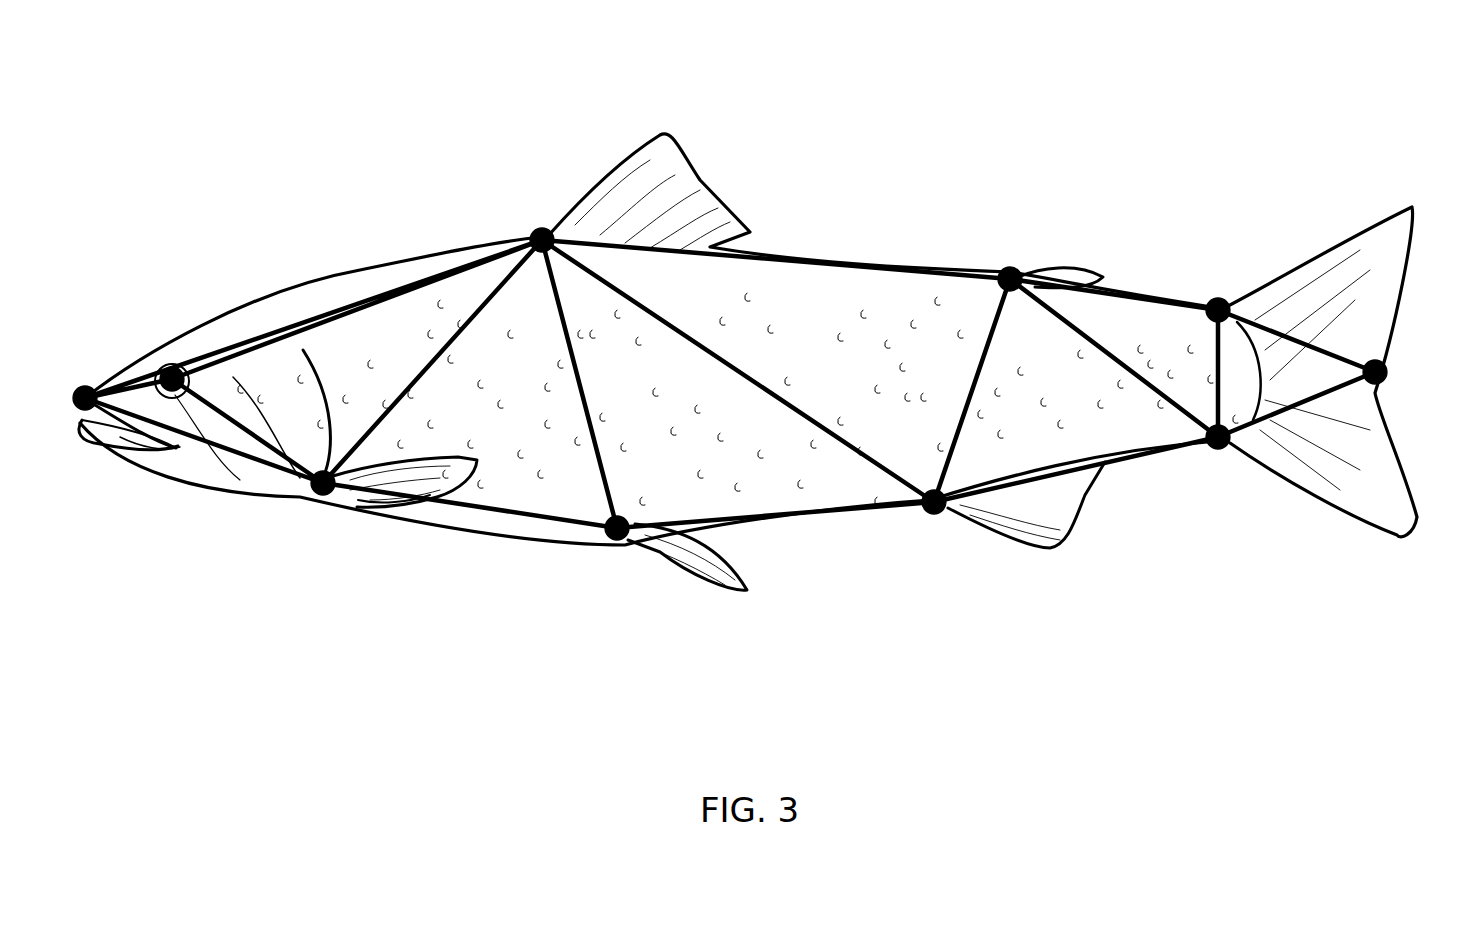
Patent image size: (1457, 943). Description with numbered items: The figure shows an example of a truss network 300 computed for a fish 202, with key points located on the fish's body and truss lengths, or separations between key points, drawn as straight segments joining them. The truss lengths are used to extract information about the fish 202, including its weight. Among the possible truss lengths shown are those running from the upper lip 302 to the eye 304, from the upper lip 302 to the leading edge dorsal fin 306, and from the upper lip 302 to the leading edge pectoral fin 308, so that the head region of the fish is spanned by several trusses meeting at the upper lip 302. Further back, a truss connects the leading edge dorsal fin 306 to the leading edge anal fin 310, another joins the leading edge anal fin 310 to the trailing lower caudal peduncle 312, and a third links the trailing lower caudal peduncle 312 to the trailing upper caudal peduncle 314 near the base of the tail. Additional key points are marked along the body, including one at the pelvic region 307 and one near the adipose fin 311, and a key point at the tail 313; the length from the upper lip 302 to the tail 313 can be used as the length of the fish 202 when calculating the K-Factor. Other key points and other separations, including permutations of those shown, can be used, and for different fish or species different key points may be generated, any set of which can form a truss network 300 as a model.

The truss network 300 is at (174, 96).
The fish 202 is at (355, 270).
The upper lip 302 is at (90, 377).
The eye 304 is at (177, 363).
The leading edge dorsal fin 306 is at (540, 236).
The key point at pelvic fin 307 is at (613, 533).
The leading edge pectoral fin 308 is at (313, 484).
The leading edge anal fin 310 is at (927, 508).
The key point at adipose fin 311 is at (1005, 276).
The trailing lower caudal peduncle 312 is at (1217, 438).
The tail 313 is at (1384, 377).
The trailing upper caudal peduncle 314 is at (1217, 308).